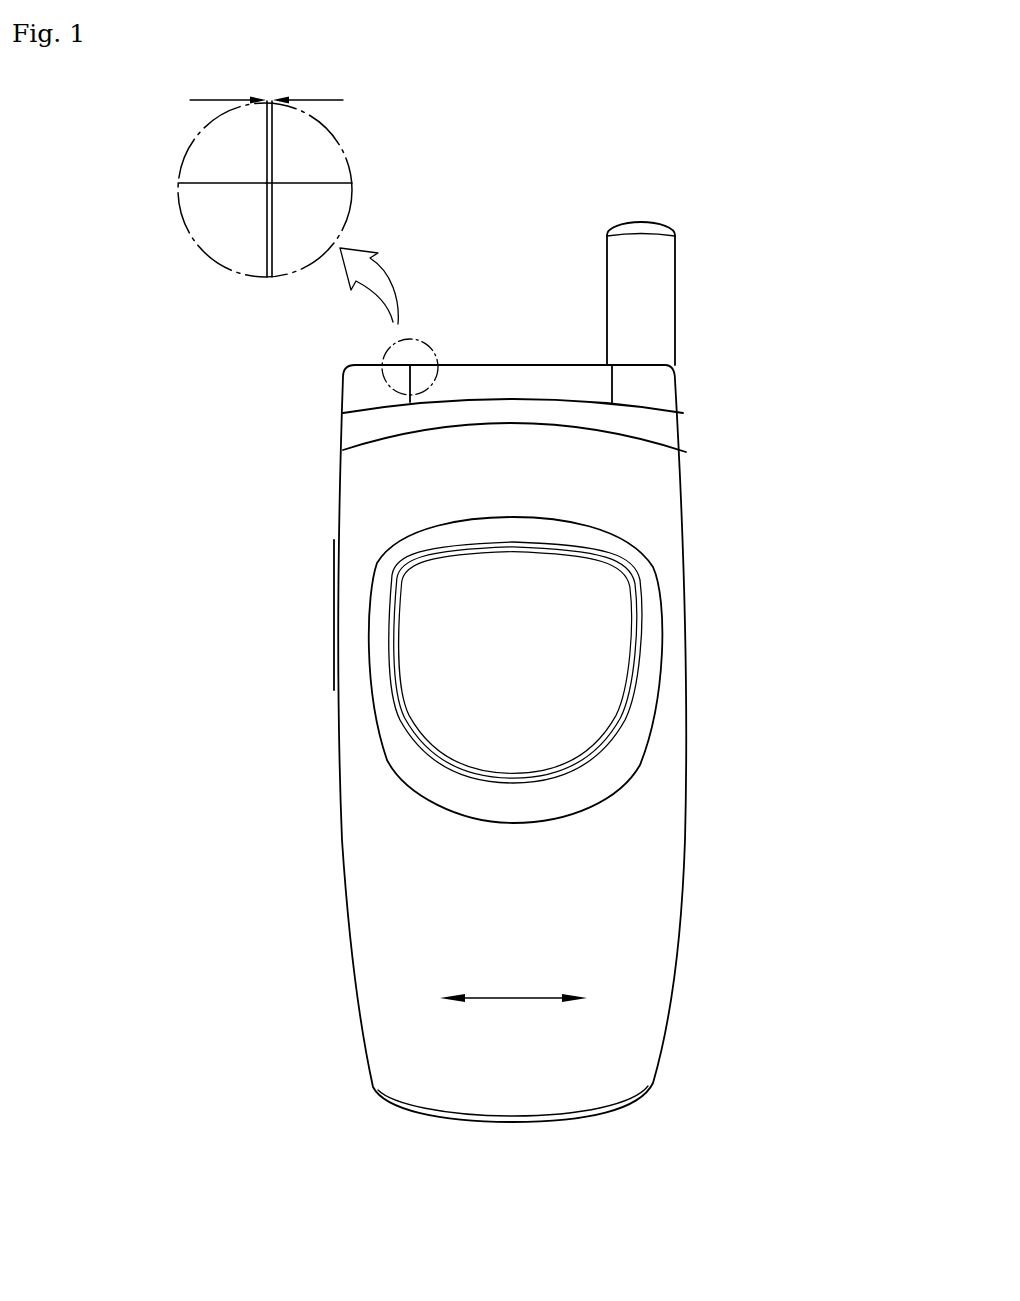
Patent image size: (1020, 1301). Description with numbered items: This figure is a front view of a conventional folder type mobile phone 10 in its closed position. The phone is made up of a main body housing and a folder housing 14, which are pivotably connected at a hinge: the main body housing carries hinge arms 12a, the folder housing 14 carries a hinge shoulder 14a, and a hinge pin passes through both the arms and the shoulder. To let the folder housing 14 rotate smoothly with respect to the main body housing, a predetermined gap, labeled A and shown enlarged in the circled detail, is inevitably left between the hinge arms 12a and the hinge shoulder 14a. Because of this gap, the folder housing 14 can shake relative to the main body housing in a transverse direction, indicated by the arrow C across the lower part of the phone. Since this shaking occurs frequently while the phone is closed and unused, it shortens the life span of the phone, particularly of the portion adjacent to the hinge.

The folder type mobile phone 10 is at (776, 363).
The hinge arms 12a is at (197, 215).
The folder housing 14 is at (672, 515).
The hinge shoulder 14a is at (343, 200).